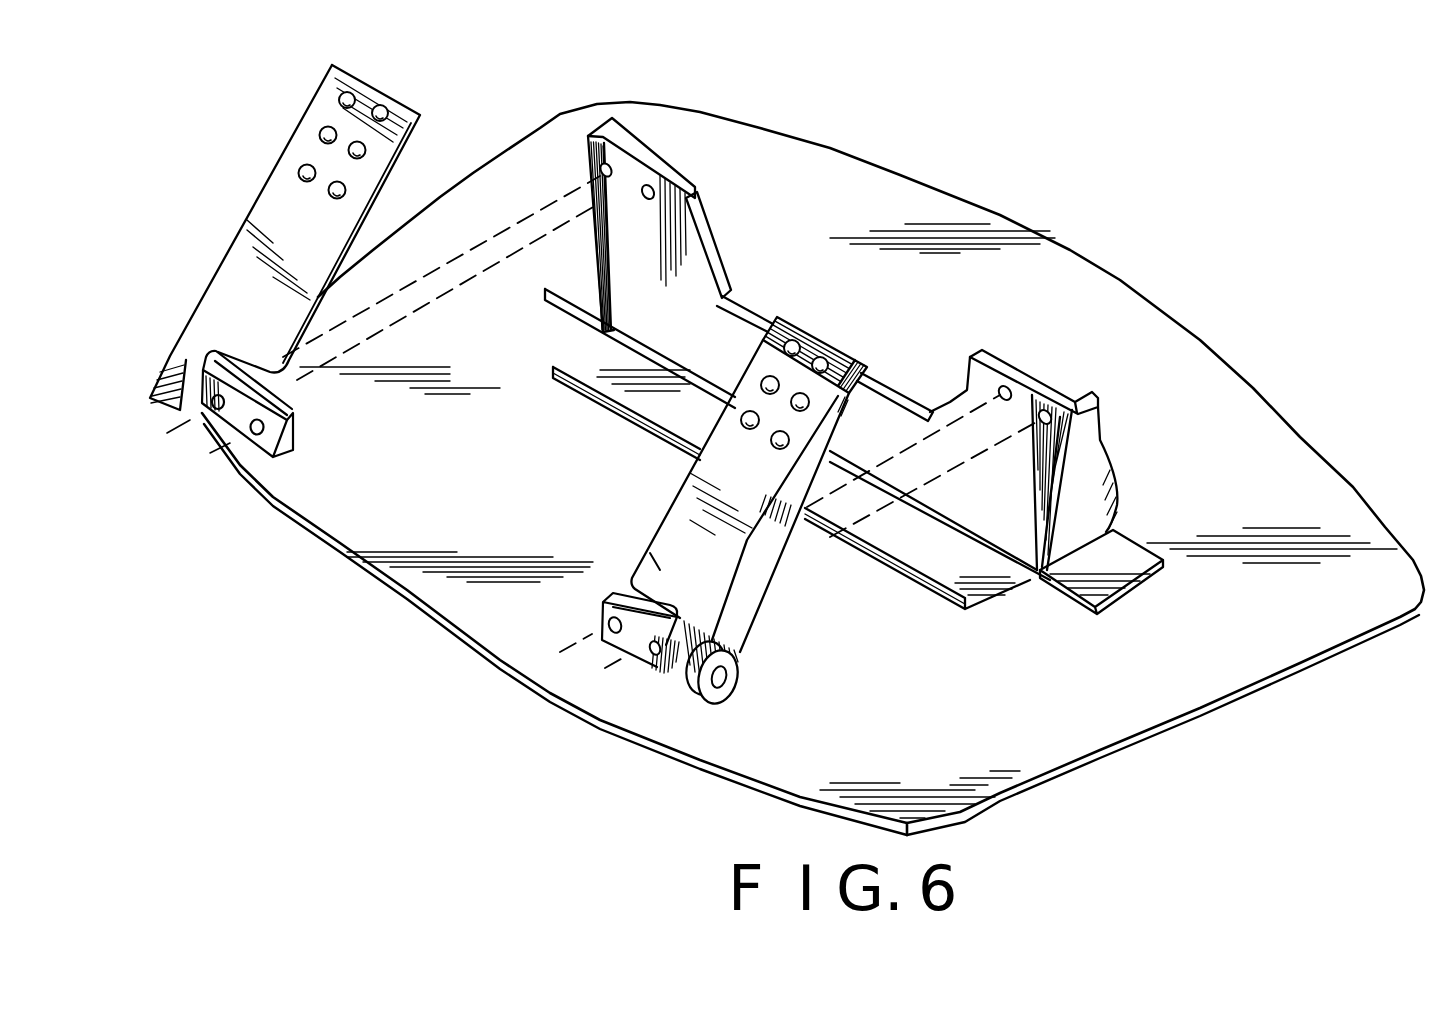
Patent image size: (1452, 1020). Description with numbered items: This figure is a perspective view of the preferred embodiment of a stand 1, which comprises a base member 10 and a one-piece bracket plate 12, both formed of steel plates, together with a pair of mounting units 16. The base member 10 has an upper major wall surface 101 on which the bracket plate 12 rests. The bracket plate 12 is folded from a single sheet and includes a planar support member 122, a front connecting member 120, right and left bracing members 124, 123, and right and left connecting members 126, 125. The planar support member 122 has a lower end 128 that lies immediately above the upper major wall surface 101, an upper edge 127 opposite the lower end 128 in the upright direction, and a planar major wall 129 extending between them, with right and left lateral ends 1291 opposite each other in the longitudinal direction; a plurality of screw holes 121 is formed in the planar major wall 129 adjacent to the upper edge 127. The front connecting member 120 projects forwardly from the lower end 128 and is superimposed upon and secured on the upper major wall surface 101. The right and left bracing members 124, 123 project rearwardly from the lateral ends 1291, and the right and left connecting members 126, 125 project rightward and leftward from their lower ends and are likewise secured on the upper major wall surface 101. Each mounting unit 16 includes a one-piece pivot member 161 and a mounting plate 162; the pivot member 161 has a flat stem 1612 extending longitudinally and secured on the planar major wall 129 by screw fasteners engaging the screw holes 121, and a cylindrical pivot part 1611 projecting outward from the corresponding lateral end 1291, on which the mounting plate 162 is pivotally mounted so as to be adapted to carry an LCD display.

The stand 1 is at (1197, 308).
The base member 10 is at (913, 190).
The upper major wall surface 101 is at (342, 533).
The bracket plate 12 is at (1140, 459).
The front connecting member 120 is at (640, 333).
The screw holes 121 is at (603, 170).
The lateral ends 1291 is at (592, 212).
The planar support member 122 is at (740, 340).
The left bracing member 123 is at (622, 128).
The right bracing member 124 is at (1097, 507).
The left connecting member 125 is at (572, 294).
The right connecting member 126 is at (1052, 587).
The upper edge 127 is at (993, 358).
The lower end 128 is at (909, 398).
The planar major wall 129 is at (638, 414).
The mounting unit 16 is at (826, 328).
The pivot member 161 is at (612, 584).
The cylindrical pivot part 1611 is at (733, 679).
The flat stem 1612 is at (612, 640).
The mounting plate 162 is at (854, 358).